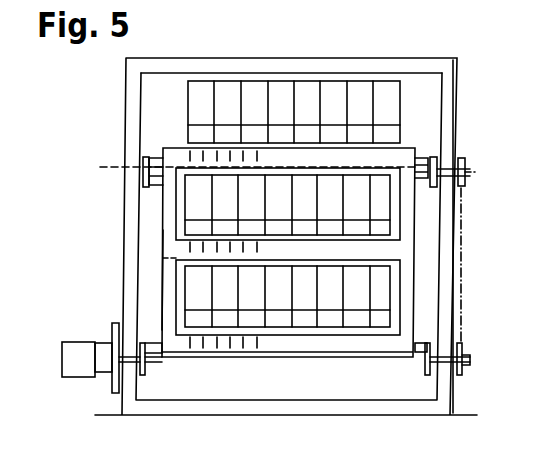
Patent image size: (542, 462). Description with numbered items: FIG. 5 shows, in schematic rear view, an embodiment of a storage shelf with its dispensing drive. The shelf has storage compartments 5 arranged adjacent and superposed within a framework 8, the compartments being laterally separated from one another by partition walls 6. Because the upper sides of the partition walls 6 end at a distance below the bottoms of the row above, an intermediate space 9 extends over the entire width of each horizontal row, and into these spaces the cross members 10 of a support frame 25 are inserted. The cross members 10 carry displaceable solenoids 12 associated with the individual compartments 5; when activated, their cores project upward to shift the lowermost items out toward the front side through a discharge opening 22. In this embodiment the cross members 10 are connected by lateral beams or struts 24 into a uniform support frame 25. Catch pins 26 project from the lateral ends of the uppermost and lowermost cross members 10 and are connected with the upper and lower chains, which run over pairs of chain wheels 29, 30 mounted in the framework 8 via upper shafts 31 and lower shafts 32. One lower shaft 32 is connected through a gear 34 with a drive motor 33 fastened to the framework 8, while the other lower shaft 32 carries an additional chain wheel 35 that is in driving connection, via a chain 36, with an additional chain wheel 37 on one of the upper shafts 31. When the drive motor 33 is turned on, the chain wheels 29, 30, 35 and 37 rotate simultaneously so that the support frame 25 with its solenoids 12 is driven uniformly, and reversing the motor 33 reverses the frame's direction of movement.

The storage compartments 5 is at (337, 93).
The partition walls 6 is at (398, 93).
The framework 8 is at (124, 152).
The intermediate space 9 is at (250, 81).
The cross members 10 is at (395, 157).
The solenoids 12 is at (227, 150).
The discharge opening 22 is at (275, 130).
The lateral beams or struts 24 is at (408, 273).
The support frame 25 is at (160, 280).
The catch pins 26 is at (147, 158).
The chain wheels 29 is at (146, 177).
The chain wheels 30 is at (144, 376).
The upper shafts 31 is at (468, 172).
The lower shafts 32 is at (467, 363).
The drive motor 33 is at (75, 353).
The gear 34 is at (102, 343).
The additional chain wheel 35 is at (462, 349).
The chain 36 is at (462, 307).
The additional chain wheel 37 is at (465, 185).